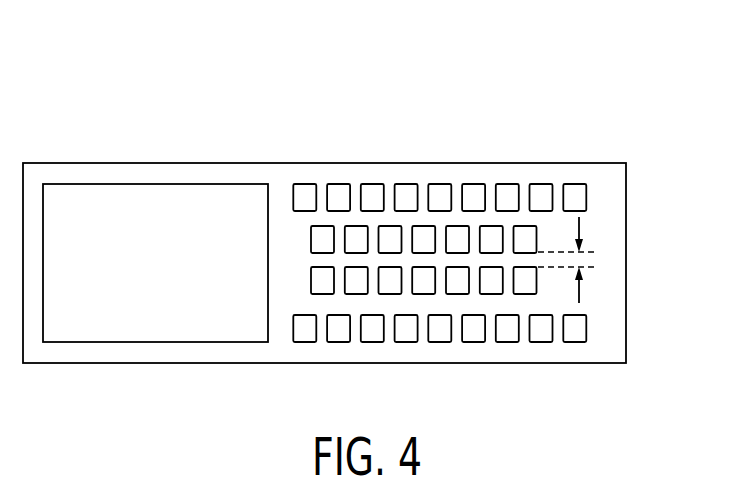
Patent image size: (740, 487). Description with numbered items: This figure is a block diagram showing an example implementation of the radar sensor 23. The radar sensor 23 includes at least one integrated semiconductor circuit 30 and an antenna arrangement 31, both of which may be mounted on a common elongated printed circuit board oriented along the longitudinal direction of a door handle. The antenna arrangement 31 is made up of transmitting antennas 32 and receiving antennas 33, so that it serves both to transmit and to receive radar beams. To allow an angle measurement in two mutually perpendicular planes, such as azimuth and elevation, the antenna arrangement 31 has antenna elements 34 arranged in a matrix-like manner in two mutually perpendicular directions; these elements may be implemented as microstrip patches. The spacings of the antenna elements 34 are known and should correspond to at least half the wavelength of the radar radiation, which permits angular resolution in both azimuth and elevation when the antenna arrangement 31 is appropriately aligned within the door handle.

The radar sensor 23 is at (636, 102).
The integrated semiconductor circuit 30 is at (144, 278).
The antenna arrangement 31 is at (426, 178).
The transmitting antennas 32 is at (490, 138).
The receiving antennas 33 is at (637, 222).
The antenna elements 34 is at (338, 184).